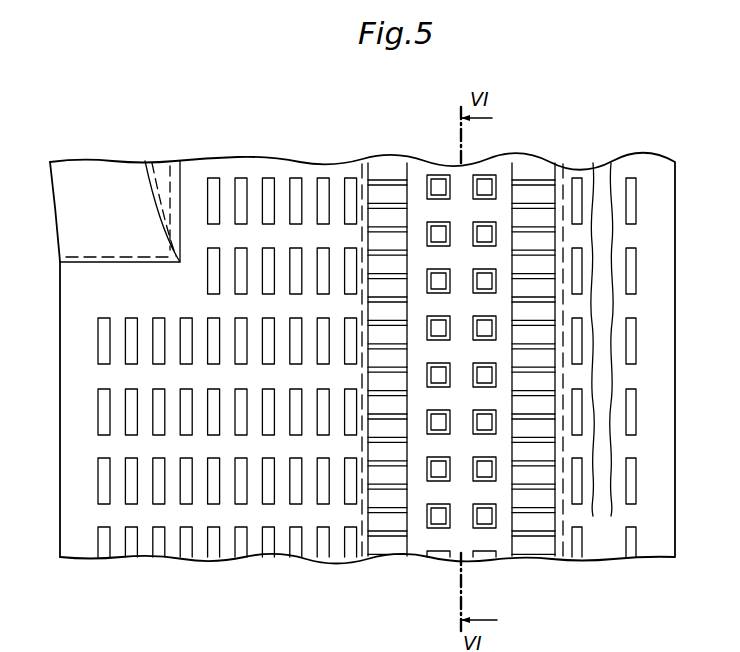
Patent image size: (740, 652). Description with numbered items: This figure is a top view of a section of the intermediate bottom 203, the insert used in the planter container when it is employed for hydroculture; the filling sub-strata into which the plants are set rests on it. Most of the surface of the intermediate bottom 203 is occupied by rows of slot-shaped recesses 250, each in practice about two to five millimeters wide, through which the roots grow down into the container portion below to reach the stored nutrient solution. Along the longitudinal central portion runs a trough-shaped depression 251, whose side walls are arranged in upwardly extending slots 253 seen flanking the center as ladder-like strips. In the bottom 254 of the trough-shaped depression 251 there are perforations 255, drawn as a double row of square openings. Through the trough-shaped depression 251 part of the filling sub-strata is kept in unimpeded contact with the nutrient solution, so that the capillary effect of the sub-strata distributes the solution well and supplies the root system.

The intermediate bottom 203 is at (310, 150).
The slot-shaped recesses 250 is at (323, 552).
The trough-shaped depression 251 is at (415, 552).
The slots 253 is at (531, 185).
The bottom of the trough-shaped depression 254 is at (488, 165).
The perforations 255 is at (485, 556).